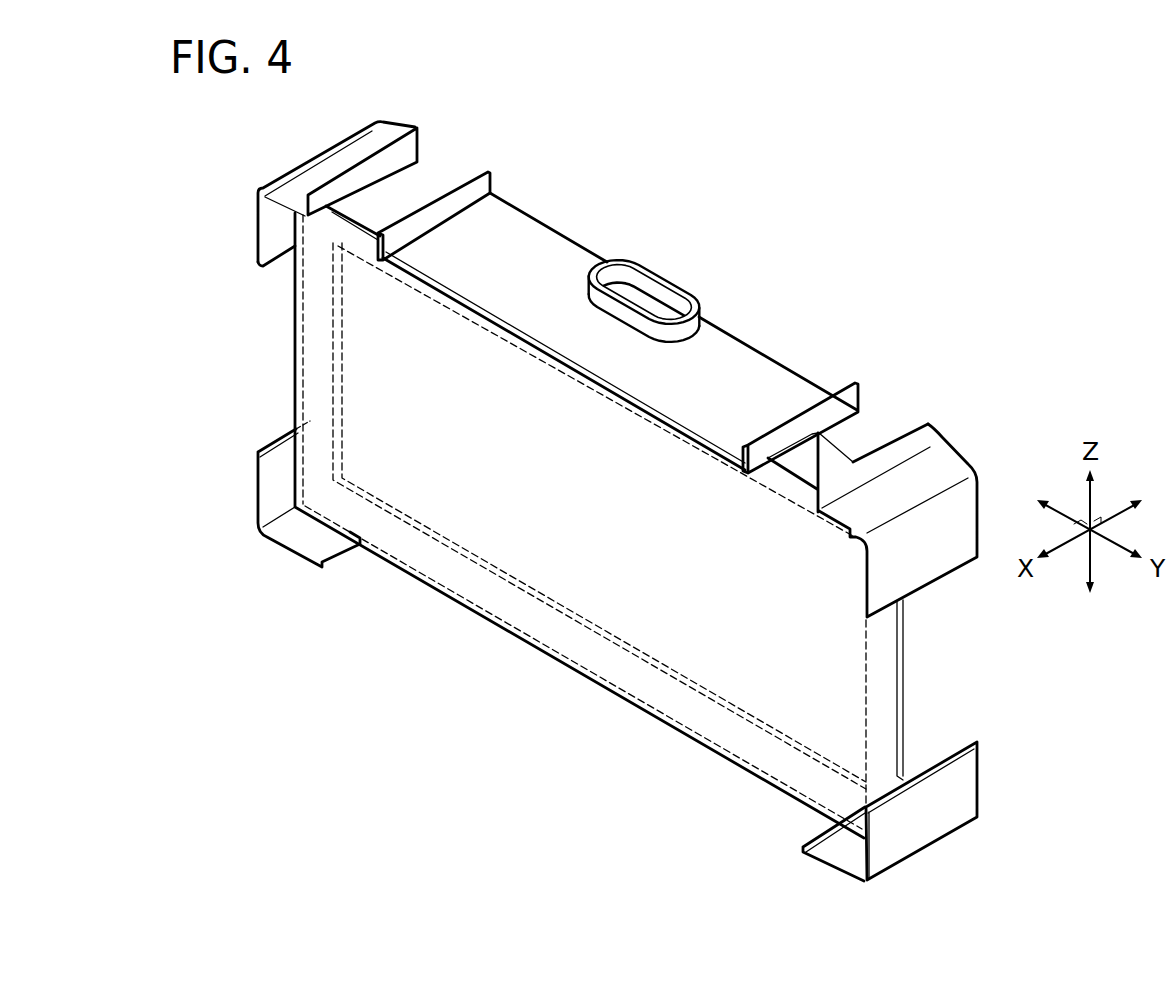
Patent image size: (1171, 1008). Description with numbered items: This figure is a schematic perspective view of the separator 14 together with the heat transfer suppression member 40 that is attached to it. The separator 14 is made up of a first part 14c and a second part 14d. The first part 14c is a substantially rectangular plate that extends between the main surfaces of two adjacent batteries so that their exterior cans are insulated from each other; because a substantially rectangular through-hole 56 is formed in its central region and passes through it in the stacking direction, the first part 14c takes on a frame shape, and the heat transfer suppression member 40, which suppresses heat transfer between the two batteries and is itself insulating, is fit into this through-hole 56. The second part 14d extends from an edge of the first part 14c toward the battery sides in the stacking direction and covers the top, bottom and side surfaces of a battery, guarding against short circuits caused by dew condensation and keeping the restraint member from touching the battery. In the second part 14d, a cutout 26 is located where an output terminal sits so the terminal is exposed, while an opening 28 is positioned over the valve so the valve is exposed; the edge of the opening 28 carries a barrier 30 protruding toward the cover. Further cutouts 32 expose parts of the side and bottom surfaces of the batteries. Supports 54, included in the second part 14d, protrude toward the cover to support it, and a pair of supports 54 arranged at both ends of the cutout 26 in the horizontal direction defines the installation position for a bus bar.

The separator 14 is at (561, 858).
The first part 14c is at (903, 628).
The second part 14d is at (532, 228).
The cutout 26 is at (857, 423).
The opening 28 is at (640, 297).
The barrier 30 is at (699, 283).
The cutouts 32 is at (282, 268).
The heat transfer suppression member 40 is at (885, 698).
The supports 54 is at (812, 400).
The through-hole 56 is at (657, 668).